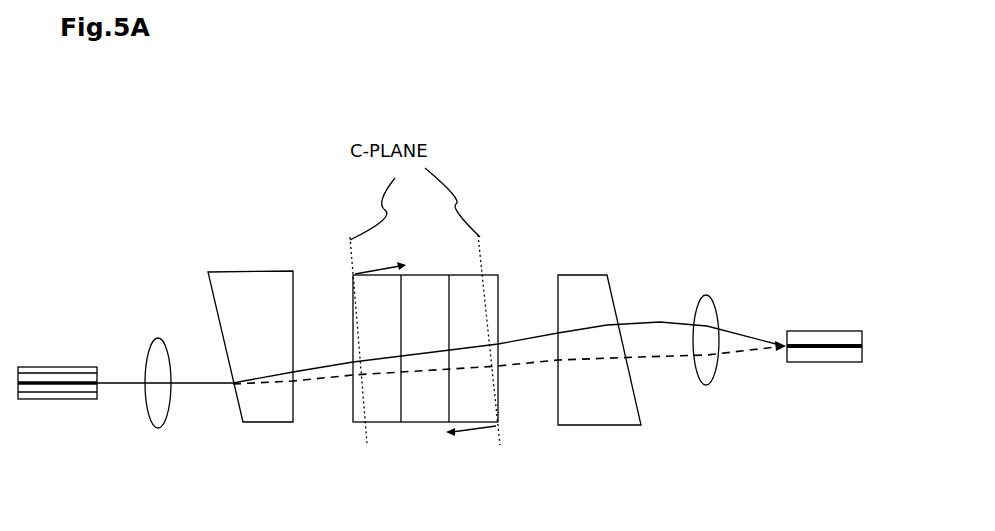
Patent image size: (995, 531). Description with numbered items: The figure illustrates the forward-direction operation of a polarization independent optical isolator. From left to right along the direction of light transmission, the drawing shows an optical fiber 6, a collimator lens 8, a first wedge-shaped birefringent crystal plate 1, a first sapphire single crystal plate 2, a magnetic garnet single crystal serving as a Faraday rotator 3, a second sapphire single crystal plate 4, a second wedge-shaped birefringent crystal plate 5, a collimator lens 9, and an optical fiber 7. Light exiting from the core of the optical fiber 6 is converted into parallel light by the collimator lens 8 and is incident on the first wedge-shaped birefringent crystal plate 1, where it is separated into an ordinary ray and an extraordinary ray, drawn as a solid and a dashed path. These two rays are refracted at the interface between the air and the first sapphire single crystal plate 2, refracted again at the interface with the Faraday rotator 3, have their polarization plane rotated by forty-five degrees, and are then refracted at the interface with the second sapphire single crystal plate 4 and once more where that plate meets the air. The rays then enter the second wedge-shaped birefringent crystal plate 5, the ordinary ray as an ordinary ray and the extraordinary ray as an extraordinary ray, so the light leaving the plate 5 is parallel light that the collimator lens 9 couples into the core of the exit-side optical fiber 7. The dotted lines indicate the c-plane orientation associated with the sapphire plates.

The first wedge-shaped birefringent crystal plate 1 is at (217, 285).
The first sapphire single crystal plate 2 is at (355, 297).
The magnetic garnet single crystal (Faraday rotator) 3 is at (427, 425).
The second sapphire single crystal plate 4 is at (500, 277).
The second wedge-shaped birefringent crystal plate 5 is at (585, 280).
The optical fiber 6 is at (62, 365).
The optical fiber 7 is at (802, 333).
The collimator lens 8 is at (148, 340).
The collimator lens 9 is at (702, 296).